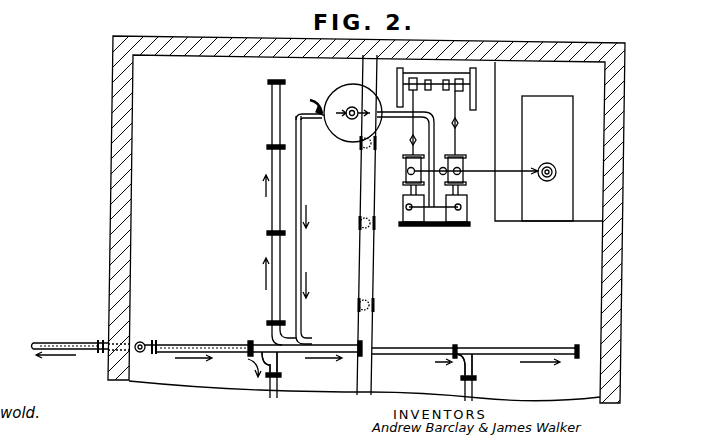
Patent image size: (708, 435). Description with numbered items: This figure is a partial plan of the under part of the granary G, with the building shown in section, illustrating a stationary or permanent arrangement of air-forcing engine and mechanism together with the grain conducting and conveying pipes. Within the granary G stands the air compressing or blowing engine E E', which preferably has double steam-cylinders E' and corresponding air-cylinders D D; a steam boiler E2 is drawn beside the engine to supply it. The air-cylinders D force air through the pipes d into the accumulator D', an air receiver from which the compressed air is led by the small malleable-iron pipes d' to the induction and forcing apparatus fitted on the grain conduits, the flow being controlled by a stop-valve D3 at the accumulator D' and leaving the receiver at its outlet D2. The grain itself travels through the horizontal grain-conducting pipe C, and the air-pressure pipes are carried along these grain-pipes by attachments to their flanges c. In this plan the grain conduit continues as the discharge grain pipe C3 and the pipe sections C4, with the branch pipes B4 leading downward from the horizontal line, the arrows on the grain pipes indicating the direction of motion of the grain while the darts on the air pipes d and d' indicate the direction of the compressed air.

The granary G is at (366, 219).
The horizontal grain-conducting pipe C is at (245, 359).
The air-forcing pipe d' is at (199, 229).
The flange c is at (212, 295).
The horizontal grain discharge pipe C3 is at (343, 348).
The grain pipe sections C4 is at (369, 240).
The branch pipe B4 is at (376, 363).
The accumulator D' is at (346, 110).
The air receiver outlet D2 is at (353, 120).
The stop-valve D3 is at (310, 102).
The air-pressure pipe d is at (417, 159).
The air compressing engine E is at (429, 158).
The steam-cylinder E' is at (470, 175).
The air-cylinder D is at (434, 218).
The steam boiler E2 is at (549, 141).